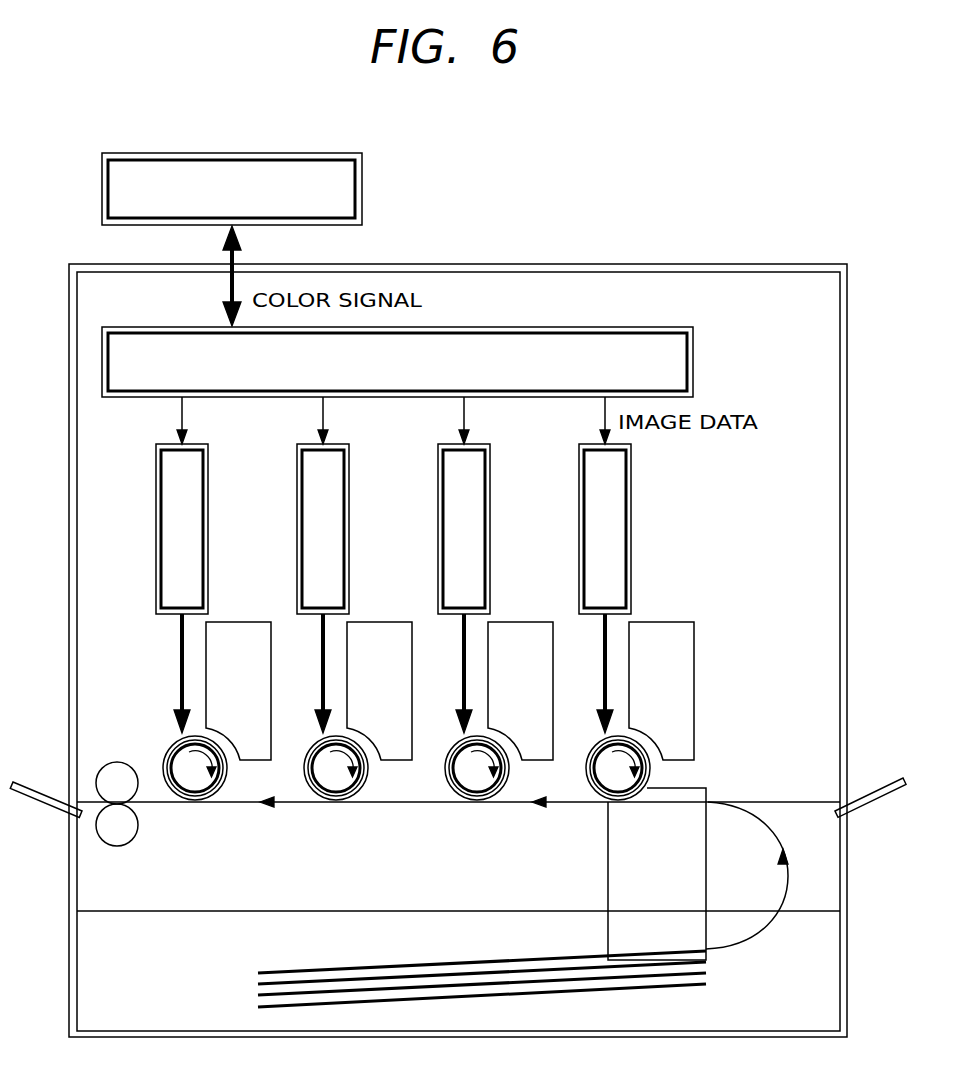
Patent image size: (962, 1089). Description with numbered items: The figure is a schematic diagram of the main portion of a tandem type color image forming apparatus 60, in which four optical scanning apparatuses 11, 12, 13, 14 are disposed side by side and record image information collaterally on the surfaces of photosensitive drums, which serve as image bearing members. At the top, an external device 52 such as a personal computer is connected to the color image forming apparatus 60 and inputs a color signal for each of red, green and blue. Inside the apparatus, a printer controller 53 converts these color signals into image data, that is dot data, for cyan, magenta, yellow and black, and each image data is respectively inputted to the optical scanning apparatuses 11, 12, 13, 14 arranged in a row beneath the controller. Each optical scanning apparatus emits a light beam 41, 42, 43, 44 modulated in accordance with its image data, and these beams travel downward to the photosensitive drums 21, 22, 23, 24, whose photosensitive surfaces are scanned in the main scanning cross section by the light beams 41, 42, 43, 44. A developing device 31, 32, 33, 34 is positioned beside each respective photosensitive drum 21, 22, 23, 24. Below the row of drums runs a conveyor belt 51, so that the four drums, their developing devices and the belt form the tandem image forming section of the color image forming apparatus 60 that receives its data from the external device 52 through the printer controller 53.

The optical scanning apparatus 11 is at (178, 502).
The optical scanning apparatus 12 is at (319, 502).
The optical scanning apparatus 13 is at (460, 502).
The optical scanning apparatus 14 is at (600, 502).
The photosensitive drum 21 is at (193, 787).
The photosensitive drum 22 is at (334, 787).
The photosensitive drum 23 is at (475, 787).
The photosensitive drum 24 is at (616, 787).
The developing device 31 is at (248, 630).
The developing device 32 is at (389, 630).
The developing device 33 is at (530, 630).
The developing device 34 is at (671, 630).
The light beam 41 is at (178, 682).
The light beam 42 is at (319, 682).
The light beam 43 is at (460, 682).
The light beam 44 is at (601, 682).
The conveyor belt 51 is at (776, 816).
The external device 52 is at (362, 167).
The printer controller 53 is at (693, 347).
The color image forming apparatus 60 is at (706, 248).